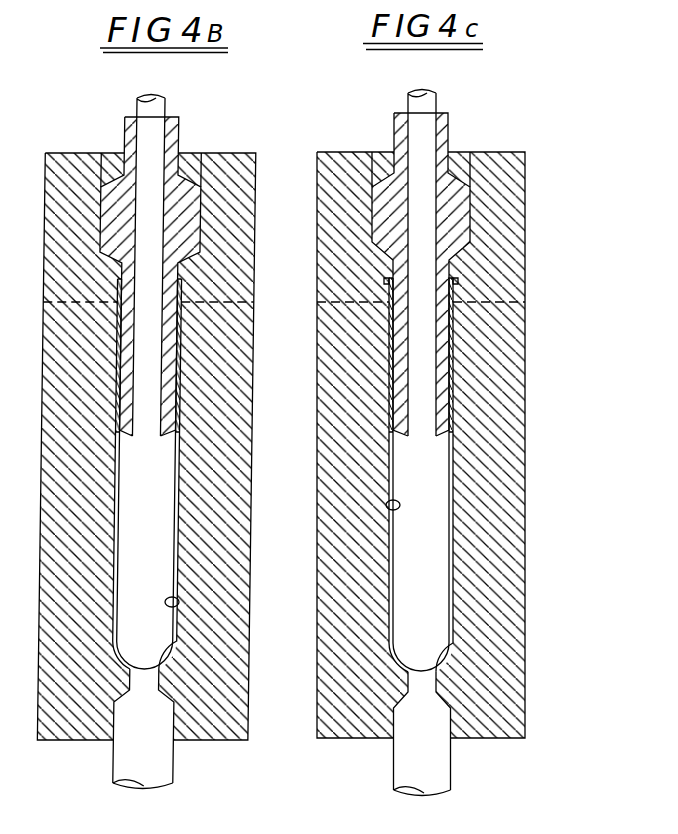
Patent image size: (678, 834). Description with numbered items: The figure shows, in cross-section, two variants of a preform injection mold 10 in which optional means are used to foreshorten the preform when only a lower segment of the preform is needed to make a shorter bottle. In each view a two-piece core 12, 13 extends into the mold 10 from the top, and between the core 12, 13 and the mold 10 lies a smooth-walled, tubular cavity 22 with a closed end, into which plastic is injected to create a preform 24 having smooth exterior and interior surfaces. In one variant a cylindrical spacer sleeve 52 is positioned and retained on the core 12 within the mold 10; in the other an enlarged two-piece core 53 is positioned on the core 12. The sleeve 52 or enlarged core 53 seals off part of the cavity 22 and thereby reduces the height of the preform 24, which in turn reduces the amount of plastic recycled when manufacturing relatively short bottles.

In FIG. 4B, the injection mold 10 is at (67, 469).
In FIG. 4C, the injection mold 10 is at (333, 417).
In FIG. 4B, the core 12 is at (157, 490).
In FIG. 4C, the core 12 is at (425, 510).
In FIG. 4B, the core 13 is at (168, 353).
In FIG. 4C, the core 13 is at (437, 298).
In FIG. 4B, the cavity 22 is at (180, 601).
In FIG. 4C, the cavity 22 is at (386, 503).
In FIG. 4B, the preform 24 is at (177, 560).
In FIG. 4C, the preform 24 is at (455, 592).
In FIG. 4B, the cylindrical spacer sleeve 52 is at (117, 347).
In FIG. 4C, the enlarged two-piece core 53 is at (448, 353).